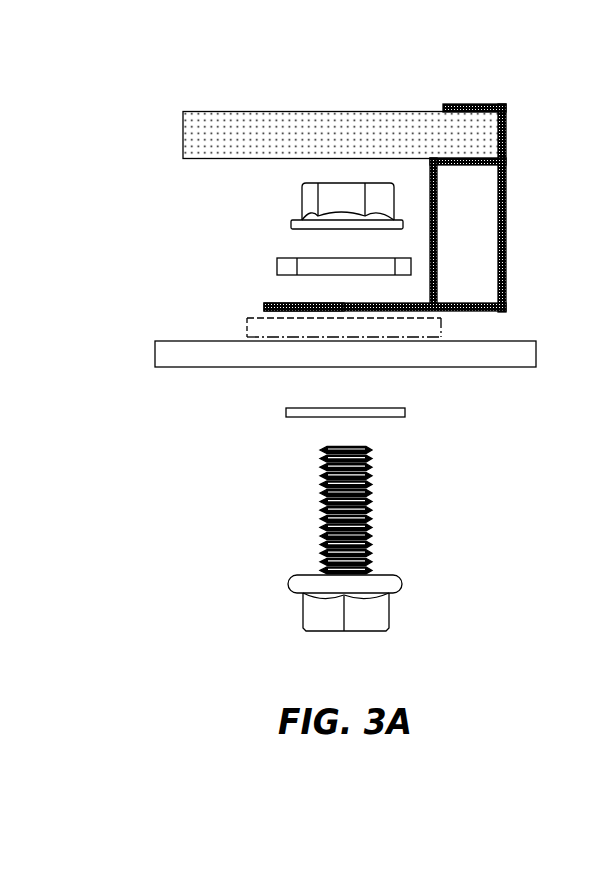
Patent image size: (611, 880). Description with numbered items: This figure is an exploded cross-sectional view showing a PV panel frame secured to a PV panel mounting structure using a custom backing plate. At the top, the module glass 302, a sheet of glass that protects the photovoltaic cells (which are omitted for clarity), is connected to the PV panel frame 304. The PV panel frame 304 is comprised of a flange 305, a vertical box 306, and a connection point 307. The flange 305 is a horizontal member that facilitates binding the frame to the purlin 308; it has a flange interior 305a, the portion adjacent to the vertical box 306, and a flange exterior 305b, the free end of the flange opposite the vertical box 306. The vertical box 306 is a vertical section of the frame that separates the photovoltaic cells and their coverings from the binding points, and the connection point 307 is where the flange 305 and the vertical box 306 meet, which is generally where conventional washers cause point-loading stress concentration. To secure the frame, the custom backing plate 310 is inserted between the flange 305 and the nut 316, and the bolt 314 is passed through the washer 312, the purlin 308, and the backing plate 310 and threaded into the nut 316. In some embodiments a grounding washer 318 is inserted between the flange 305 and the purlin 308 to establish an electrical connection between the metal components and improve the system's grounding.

The module glass 302 is at (322, 111).
The PV panel frame 304 is at (386, 215).
The flange 305 is at (262, 306).
The flange interior 305a is at (412, 294).
The flange exterior 305b is at (258, 297).
The vertical box 306 is at (506, 236).
The connection point 307 is at (450, 302).
The purlin 308 is at (155, 350).
The custom backing plate 310 is at (277, 262).
The washer 312 is at (286, 411).
The bolt 314 is at (303, 605).
The nut 316 is at (302, 198).
The grounding washer 318 is at (313, 338).